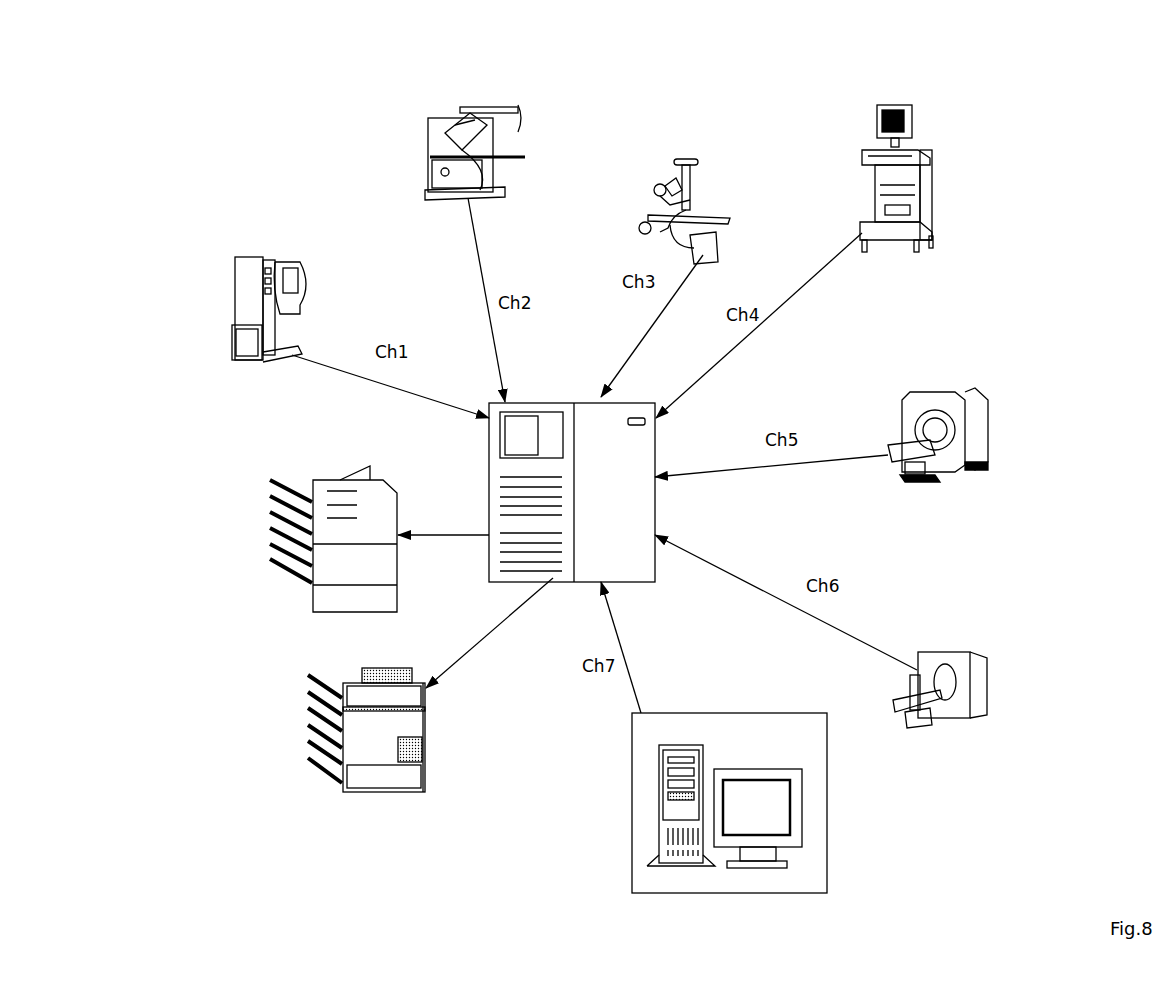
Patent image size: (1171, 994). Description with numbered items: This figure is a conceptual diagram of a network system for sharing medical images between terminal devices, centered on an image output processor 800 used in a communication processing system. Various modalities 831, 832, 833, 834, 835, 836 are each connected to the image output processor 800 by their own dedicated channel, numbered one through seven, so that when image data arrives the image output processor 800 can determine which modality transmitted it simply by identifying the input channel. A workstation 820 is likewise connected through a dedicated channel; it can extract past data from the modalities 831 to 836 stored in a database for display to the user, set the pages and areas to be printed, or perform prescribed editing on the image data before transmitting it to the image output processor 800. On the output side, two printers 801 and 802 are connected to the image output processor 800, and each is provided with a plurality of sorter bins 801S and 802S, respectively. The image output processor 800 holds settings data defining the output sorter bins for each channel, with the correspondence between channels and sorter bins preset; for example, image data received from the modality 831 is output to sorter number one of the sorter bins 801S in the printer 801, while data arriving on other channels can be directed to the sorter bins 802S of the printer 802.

The image output processor 800 is at (655, 582).
The printer 801 is at (312, 478).
The sorter bin 801S is at (256, 480).
The printer 802 is at (425, 797).
The sorter bin 802S is at (298, 770).
The workstation 820 is at (827, 805).
The modality 831 is at (252, 250).
The modality 832 is at (427, 140).
The modality 833 is at (694, 170).
The modality 834 is at (930, 147).
The modality 835 is at (985, 388).
The modality 836 is at (960, 650).